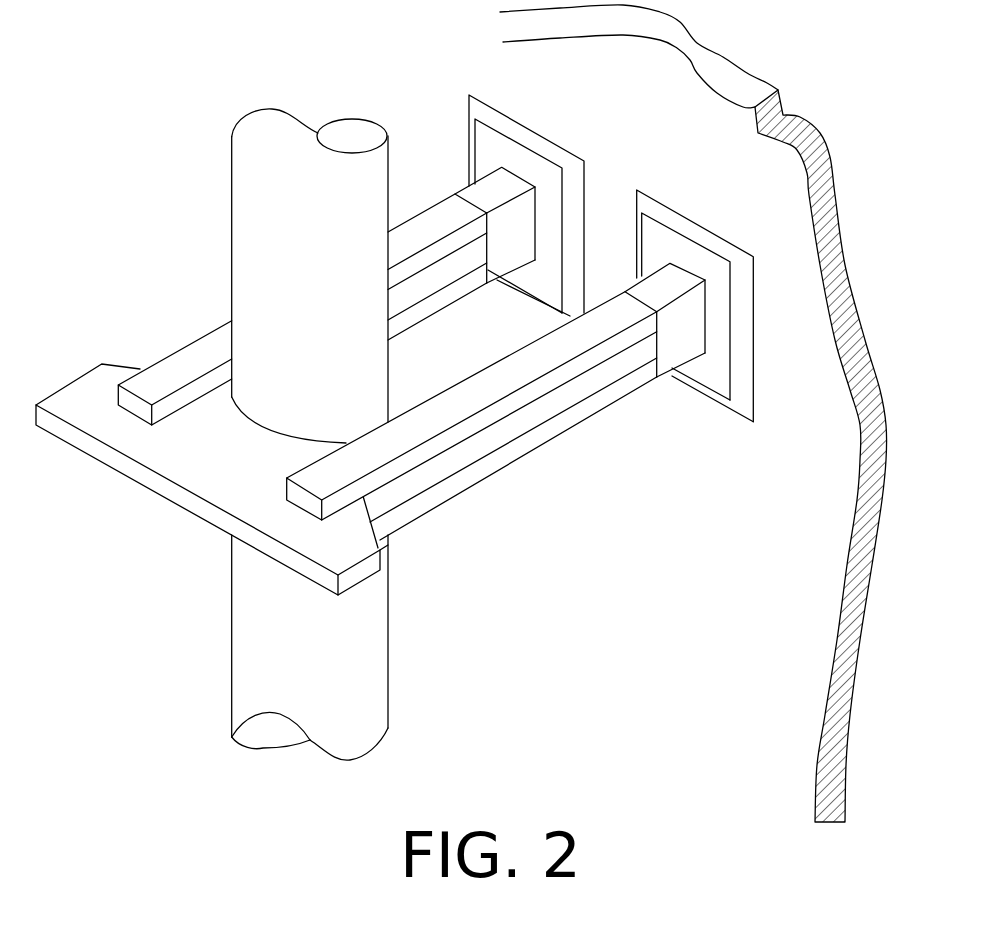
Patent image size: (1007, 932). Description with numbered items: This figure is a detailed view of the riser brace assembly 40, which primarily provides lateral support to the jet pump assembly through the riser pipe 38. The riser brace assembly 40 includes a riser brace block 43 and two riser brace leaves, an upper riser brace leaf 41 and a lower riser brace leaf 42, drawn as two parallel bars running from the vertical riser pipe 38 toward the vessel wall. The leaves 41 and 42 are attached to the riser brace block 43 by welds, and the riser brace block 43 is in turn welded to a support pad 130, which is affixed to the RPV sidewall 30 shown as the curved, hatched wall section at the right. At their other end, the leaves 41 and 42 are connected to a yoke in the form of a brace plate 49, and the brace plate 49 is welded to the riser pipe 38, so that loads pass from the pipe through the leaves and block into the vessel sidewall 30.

The RPV sidewall 30 is at (688, 140).
The riser pipe 38 is at (232, 698).
The riser brace assembly 40 is at (436, 355).
The upper riser brace leaf 41 is at (433, 200).
The lower riser brace leaf 42 is at (523, 457).
The riser brace block 43 is at (628, 269).
The brace plate 49 is at (135, 485).
The support pad 130 is at (756, 404).